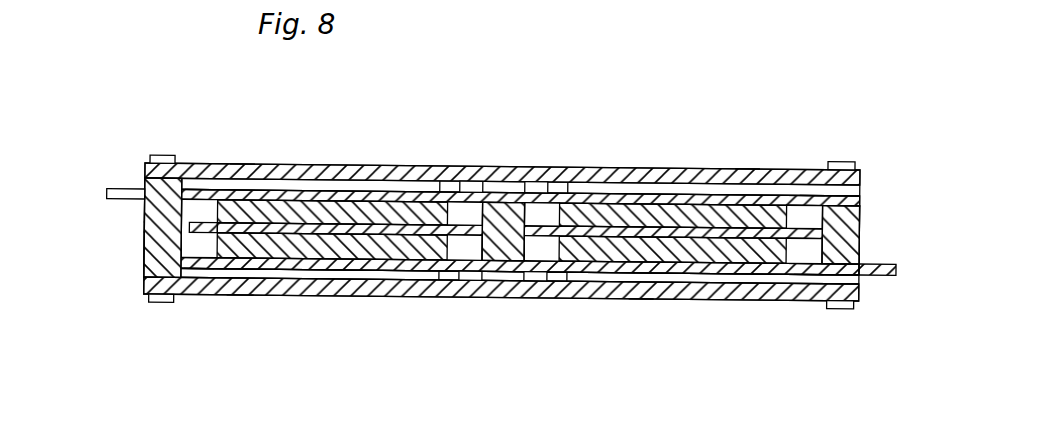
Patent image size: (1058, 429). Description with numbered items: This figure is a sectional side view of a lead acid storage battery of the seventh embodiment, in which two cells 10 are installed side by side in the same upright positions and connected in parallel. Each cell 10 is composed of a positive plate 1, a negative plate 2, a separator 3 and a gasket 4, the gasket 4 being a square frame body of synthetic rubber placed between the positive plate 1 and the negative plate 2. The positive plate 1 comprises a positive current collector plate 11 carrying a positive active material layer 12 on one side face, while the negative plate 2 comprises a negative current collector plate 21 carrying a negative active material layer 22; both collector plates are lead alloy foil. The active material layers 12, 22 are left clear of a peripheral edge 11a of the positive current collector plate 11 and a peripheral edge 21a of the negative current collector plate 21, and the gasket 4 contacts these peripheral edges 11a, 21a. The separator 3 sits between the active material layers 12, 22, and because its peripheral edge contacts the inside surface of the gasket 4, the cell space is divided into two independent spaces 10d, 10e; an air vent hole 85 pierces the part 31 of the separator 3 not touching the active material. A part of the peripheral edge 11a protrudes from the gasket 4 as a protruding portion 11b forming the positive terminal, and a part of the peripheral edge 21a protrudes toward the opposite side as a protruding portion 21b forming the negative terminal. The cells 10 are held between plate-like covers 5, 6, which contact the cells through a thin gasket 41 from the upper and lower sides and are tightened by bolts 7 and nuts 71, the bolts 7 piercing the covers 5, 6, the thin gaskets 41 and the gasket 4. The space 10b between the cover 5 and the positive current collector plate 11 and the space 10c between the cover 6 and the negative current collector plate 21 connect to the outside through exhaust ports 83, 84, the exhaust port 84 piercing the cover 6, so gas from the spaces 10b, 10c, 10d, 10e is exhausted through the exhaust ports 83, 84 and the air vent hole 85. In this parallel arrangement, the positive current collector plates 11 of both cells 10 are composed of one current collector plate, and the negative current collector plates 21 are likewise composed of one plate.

The positive plate 1 is at (358, 334).
The negative plate 2 is at (365, 119).
The separator 3 is at (405, 232).
The gasket 4 is at (505, 163).
The cover 5 is at (260, 280).
The cover 6 is at (266, 163).
The bolt 7 is at (160, 155).
The cell 10 is at (128, 233).
The space 10b is at (240, 282).
The space 10c is at (242, 163).
The independent space 10d is at (188, 213).
The independent space 10e is at (190, 248).
The positive current collector plate 11 is at (501, 248).
The peripheral edge 11a is at (200, 270).
The protruding portion 11b is at (890, 268).
The positive active material layer 12 is at (501, 266).
The negative current collector plate 21 is at (501, 214).
The peripheral edge 21a is at (199, 163).
The protruding portion 21b is at (115, 189).
The negative active material layer 22 is at (502, 197).
The peripheral edge of separator 31 is at (512, 200).
The thin gasket 41 is at (862, 165).
The nut 71 is at (160, 305).
The exhaust port 83 is at (447, 178).
The exhaust port 84 is at (468, 178).
The air vent hole 85 is at (452, 277).